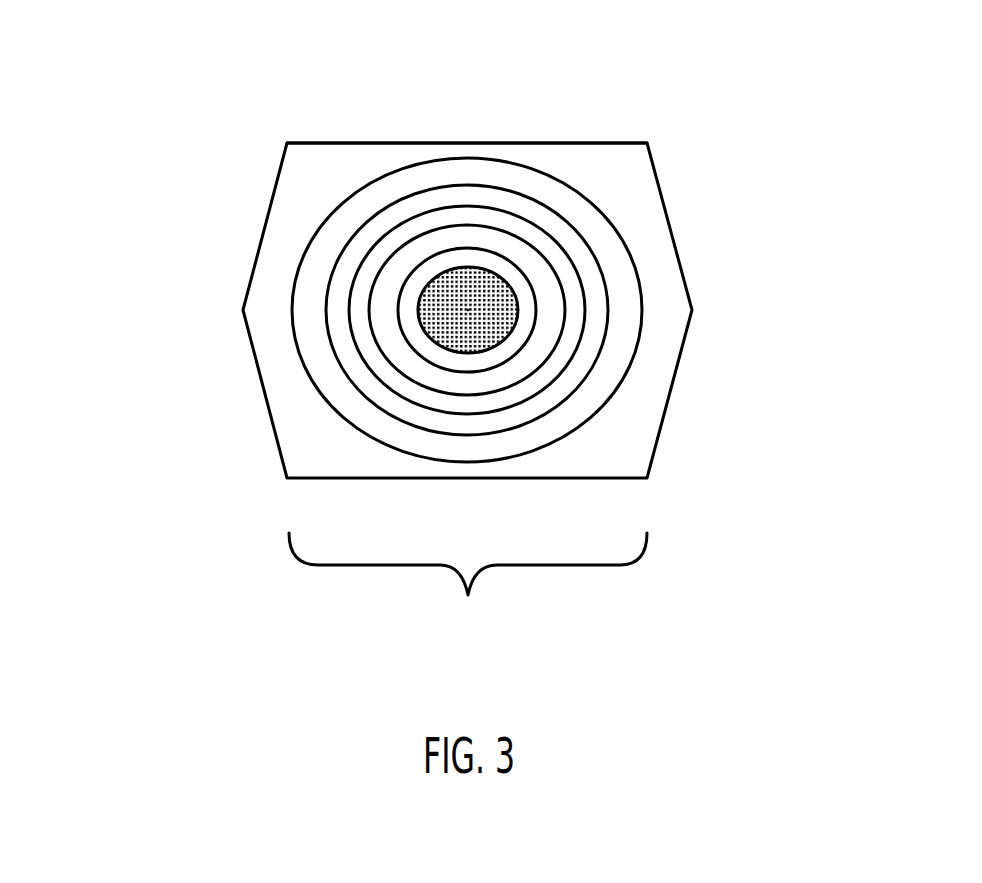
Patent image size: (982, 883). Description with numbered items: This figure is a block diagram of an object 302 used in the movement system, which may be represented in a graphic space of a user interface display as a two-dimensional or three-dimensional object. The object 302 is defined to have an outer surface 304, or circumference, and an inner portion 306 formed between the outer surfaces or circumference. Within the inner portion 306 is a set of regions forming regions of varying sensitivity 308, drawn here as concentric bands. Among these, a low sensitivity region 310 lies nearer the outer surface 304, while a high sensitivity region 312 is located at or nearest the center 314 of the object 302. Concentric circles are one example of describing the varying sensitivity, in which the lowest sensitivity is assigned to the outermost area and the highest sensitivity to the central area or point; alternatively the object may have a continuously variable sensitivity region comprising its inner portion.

The object 302 is at (605, 142).
The outer surface 304 is at (325, 142).
The inner portion 306 is at (323, 423).
The regions of varying sensitivity 308 is at (489, 698).
The low sensitivity region 310 is at (268, 332).
The high sensitivity region 312 is at (524, 322).
The center 314 is at (453, 347).